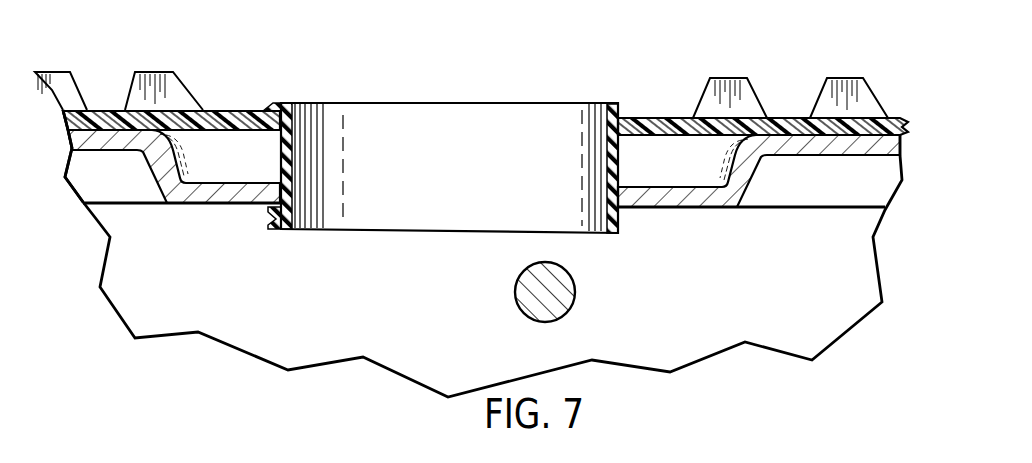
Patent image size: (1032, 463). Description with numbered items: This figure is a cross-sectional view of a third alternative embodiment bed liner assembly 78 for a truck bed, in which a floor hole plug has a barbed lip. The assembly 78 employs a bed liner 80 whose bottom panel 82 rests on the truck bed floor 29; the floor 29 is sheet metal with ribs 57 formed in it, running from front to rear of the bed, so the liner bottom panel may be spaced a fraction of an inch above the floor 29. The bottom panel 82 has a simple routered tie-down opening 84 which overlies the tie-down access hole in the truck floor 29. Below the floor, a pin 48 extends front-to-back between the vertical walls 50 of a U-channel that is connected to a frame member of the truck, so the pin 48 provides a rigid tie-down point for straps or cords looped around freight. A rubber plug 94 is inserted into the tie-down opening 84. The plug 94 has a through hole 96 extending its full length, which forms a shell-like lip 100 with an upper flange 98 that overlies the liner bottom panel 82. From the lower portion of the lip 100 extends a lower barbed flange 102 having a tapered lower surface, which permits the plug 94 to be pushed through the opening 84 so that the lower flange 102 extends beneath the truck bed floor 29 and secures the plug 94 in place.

The truck bed floor 29 is at (135, 204).
The pin 48 is at (575, 286).
The vertical walls 50 is at (759, 293).
The ribs 57 is at (88, 151).
The bed liner assembly 78 is at (800, 83).
The bed liner 80 is at (217, 110).
The bottom panel 82 is at (207, 133).
The tie-down opening 84 is at (633, 136).
The rubber plug 94 is at (517, 92).
The through hole 96 is at (293, 133).
The upper flange 98 is at (276, 101).
The shell-like lip 100 is at (608, 155).
The lower barbed flange 102 is at (273, 229).